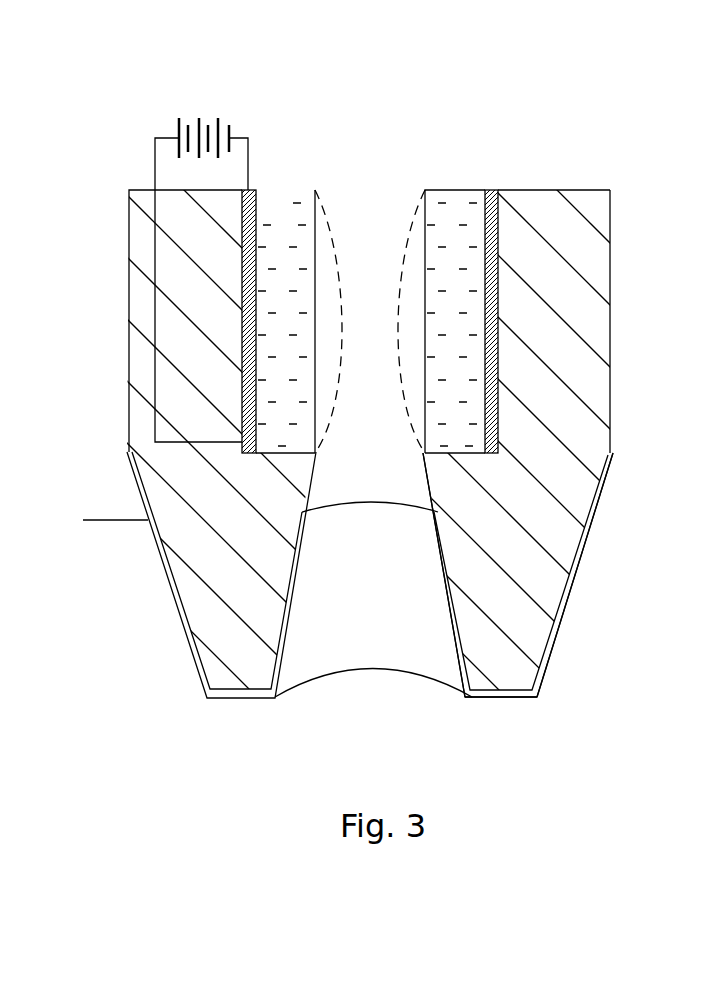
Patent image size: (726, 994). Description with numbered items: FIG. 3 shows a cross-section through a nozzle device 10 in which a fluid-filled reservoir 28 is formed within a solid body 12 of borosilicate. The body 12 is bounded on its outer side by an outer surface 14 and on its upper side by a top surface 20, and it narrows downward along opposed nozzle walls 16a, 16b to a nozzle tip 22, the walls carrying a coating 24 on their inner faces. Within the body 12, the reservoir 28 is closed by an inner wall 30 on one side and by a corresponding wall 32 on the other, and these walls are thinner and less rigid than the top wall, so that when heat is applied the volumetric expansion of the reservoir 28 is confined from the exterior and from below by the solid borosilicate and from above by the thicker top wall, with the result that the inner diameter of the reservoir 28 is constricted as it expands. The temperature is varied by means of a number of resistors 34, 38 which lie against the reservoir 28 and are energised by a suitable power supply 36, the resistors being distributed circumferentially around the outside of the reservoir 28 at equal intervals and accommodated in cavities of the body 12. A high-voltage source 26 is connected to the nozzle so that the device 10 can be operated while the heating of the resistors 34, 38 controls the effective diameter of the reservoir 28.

The electrospray nozzle device 10 is at (176, 716).
The nozzle body 12 is at (588, 398).
The outer side surface 14 is at (611, 253).
The nozzle wall 16a is at (531, 643).
The nozzle wall 16b is at (473, 660).
The top surface 20 is at (577, 190).
The nozzle tip 22 is at (505, 696).
The conductive coating 24 is at (580, 560).
The high voltage source 26 is at (58, 538).
The reservoir 28 is at (289, 190).
The inner wall 30 is at (315, 218).
The fluid meniscus 32 is at (414, 212).
The resistor 34 is at (243, 284).
The power supply 36 is at (146, 113).
The electrode 38 is at (492, 192).